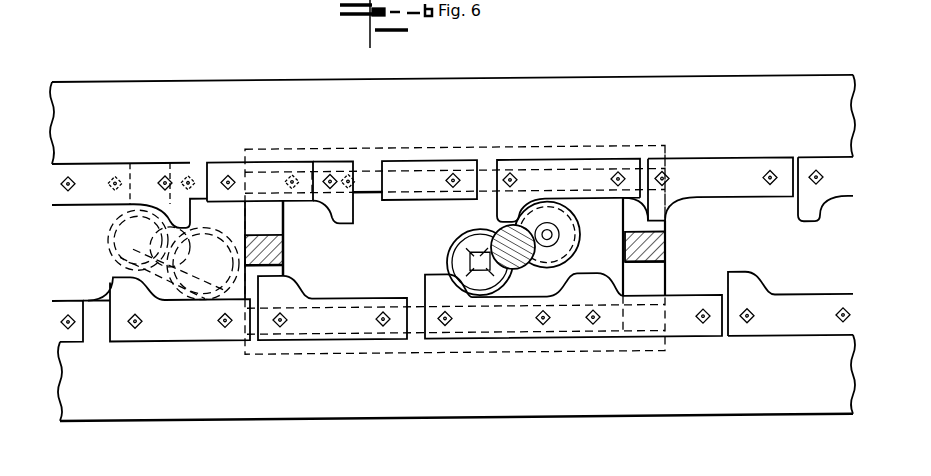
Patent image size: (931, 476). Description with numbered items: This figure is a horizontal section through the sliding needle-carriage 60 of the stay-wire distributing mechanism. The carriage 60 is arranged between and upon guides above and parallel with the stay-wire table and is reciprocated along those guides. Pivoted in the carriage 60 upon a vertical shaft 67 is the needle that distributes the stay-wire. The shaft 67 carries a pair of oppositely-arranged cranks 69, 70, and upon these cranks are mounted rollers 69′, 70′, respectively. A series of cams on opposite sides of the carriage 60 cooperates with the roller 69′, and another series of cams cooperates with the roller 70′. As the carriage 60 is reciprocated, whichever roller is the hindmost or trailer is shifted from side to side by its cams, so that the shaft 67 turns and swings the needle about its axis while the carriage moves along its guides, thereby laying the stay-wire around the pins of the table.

The sliding needle-carriage 60 is at (668, 238).
The vertical shaft 67 is at (518, 221).
The crank 69 is at (548, 249).
The roller 69′ is at (579, 247).
The crank 70 is at (478, 267).
The roller 70′ is at (470, 245).